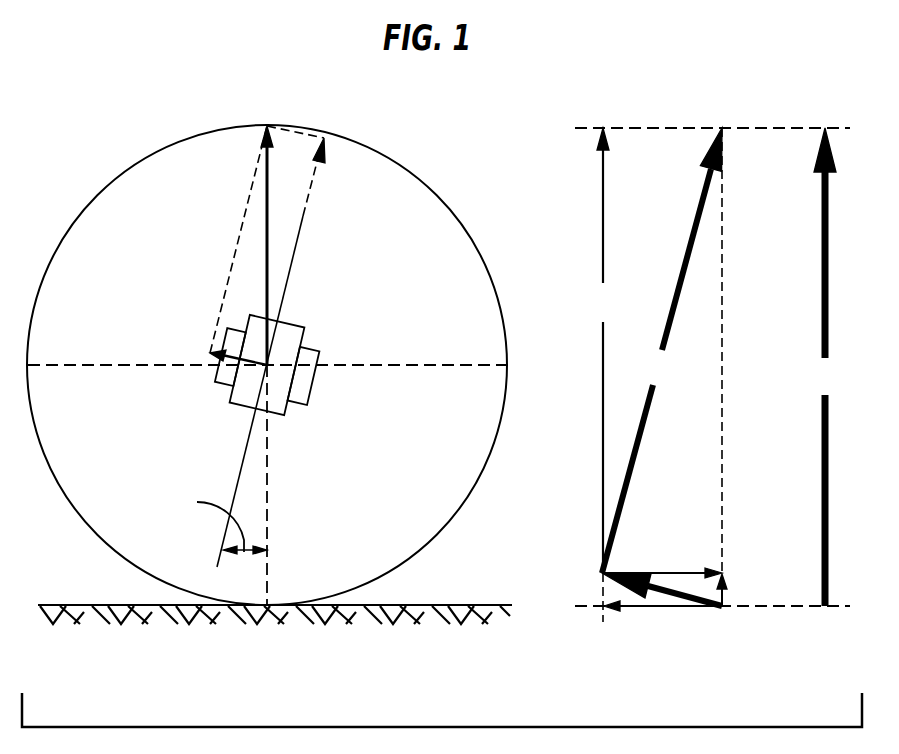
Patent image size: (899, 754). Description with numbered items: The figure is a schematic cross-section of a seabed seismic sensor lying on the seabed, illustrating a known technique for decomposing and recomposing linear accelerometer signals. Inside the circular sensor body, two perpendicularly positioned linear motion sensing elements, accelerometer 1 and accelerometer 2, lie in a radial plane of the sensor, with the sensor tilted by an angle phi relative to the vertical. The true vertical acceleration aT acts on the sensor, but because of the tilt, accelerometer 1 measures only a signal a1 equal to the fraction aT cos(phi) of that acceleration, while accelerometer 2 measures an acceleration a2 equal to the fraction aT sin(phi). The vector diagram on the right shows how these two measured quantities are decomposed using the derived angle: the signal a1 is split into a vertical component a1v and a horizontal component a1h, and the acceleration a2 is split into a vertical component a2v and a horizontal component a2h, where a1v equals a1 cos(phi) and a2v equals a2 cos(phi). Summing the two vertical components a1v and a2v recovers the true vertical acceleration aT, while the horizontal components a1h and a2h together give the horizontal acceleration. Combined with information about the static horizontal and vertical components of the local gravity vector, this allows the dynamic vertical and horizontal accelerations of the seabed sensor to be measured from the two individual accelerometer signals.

The accelerometer 1 is at (352, 294).
The accelerometer 2 is at (295, 412).
The true vertical acceleration aT is at (545, 366).
The signal measured by accelerometer 1 a1 is at (466, 349).
The acceleration measured by accelerometer 2 a2 is at (632, 637).
The vertical component of a1 a1v is at (606, 350).
The horizontal component of a1 a1h is at (671, 568).
The vertical component of a2 a2v is at (727, 596).
The horizontal component of a2 a2h is at (677, 609).